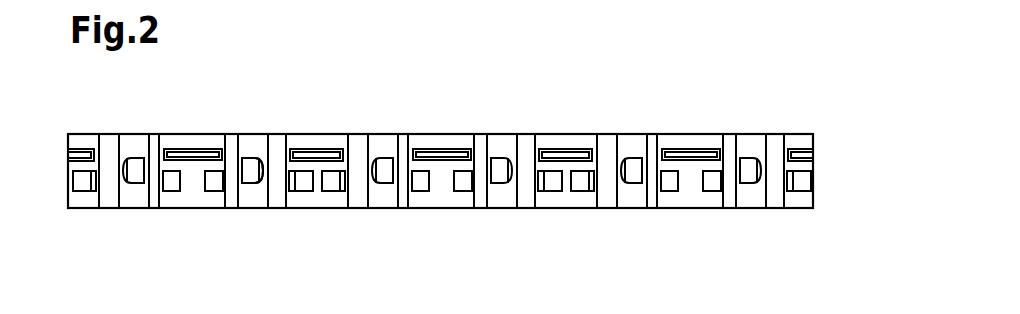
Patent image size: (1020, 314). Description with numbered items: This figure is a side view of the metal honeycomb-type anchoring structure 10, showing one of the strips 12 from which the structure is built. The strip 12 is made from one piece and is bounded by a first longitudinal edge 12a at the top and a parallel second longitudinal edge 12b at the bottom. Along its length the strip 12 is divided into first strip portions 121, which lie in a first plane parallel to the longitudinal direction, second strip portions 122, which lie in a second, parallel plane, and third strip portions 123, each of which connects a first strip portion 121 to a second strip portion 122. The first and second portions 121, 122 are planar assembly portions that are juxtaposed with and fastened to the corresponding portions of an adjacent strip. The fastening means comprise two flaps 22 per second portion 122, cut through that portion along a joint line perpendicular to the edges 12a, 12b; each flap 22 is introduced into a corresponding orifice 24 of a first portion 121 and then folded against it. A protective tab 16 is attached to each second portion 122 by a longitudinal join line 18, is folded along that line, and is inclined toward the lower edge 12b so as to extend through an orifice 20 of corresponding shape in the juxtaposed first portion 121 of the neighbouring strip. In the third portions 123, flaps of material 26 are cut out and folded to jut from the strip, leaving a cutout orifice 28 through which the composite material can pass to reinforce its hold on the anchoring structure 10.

The anchoring structure 10 is at (828, 132).
The strip 12 is at (803, 200).
The first longitudinal edge 12a is at (773, 134).
The second longitudinal edge 12b is at (773, 208).
The protective tab 16 is at (83, 150).
The longitudinal join line 18 is at (299, 149).
The orifice 20 is at (190, 151).
The flap 22 is at (295, 175).
The orifice 24 is at (170, 185).
The flap of material 26 is at (250, 158).
The cutout orifice 28 is at (263, 183).
The first strip portion 121 is at (680, 134).
The second strip portion 122 is at (557, 150).
The third strip portion 123 is at (631, 136).